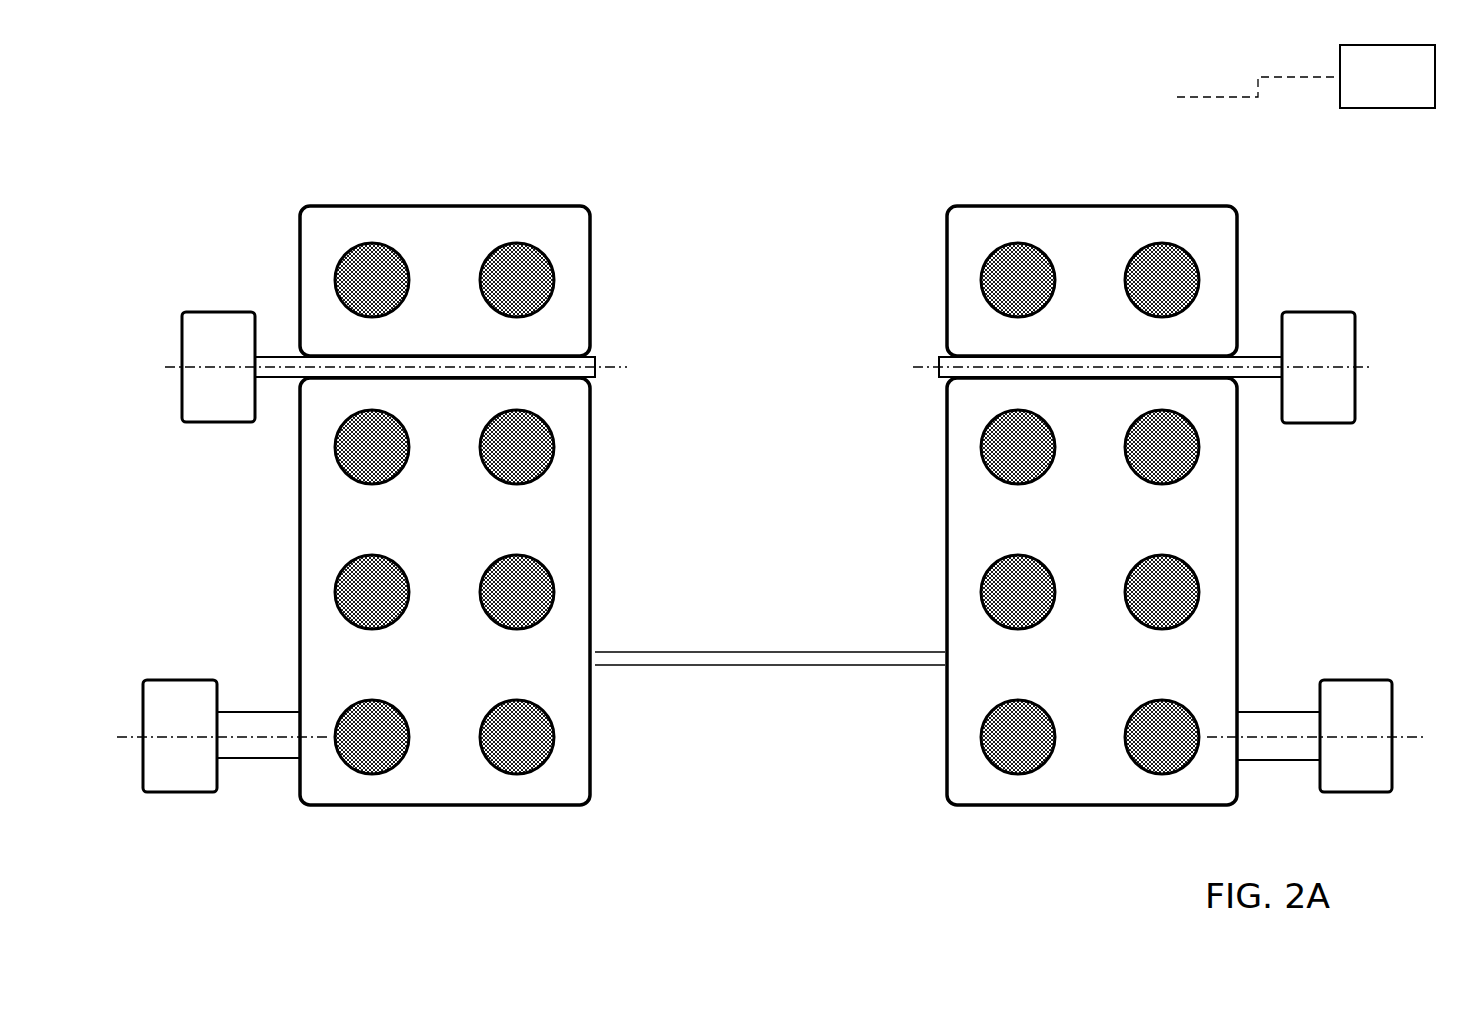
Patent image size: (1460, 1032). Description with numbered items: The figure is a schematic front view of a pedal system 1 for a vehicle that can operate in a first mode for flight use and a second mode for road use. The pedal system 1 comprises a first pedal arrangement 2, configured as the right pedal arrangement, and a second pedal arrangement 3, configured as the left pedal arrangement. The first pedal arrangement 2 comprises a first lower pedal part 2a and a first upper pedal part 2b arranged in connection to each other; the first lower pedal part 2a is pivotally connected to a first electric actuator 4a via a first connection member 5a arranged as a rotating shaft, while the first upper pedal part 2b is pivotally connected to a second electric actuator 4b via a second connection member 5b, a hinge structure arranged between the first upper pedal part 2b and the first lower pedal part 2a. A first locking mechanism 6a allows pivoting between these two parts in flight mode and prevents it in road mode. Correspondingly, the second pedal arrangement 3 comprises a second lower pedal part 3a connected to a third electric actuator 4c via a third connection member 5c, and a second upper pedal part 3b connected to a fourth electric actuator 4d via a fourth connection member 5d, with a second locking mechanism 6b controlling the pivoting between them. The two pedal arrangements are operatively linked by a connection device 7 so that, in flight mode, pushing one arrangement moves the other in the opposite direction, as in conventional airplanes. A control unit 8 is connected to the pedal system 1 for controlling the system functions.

The pedal system 1 is at (974, 110).
The first pedal arrangement 2 is at (1275, 193).
The first lower pedal part 2a is at (977, 702).
The first upper pedal part 2b is at (963, 245).
The second pedal arrangement 3 is at (251, 198).
The second lower pedal part 3a is at (570, 703).
The second upper pedal part 3b is at (577, 245).
The first electric actuator 4a is at (1378, 715).
The second electric actuator 4b is at (1325, 345).
The third electric actuator 4c is at (157, 715).
The fourth electric actuator 4d is at (198, 330).
The first connection member 5a is at (1263, 722).
The second connection member 5b is at (940, 357).
The third connection member 5c is at (275, 722).
The fourth connection member 5d is at (597, 357).
The first locking mechanism 6a is at (896, 365).
The second locking mechanism 6b is at (645, 361).
The connection device 7 is at (778, 660).
The control unit 8 is at (1380, 97).